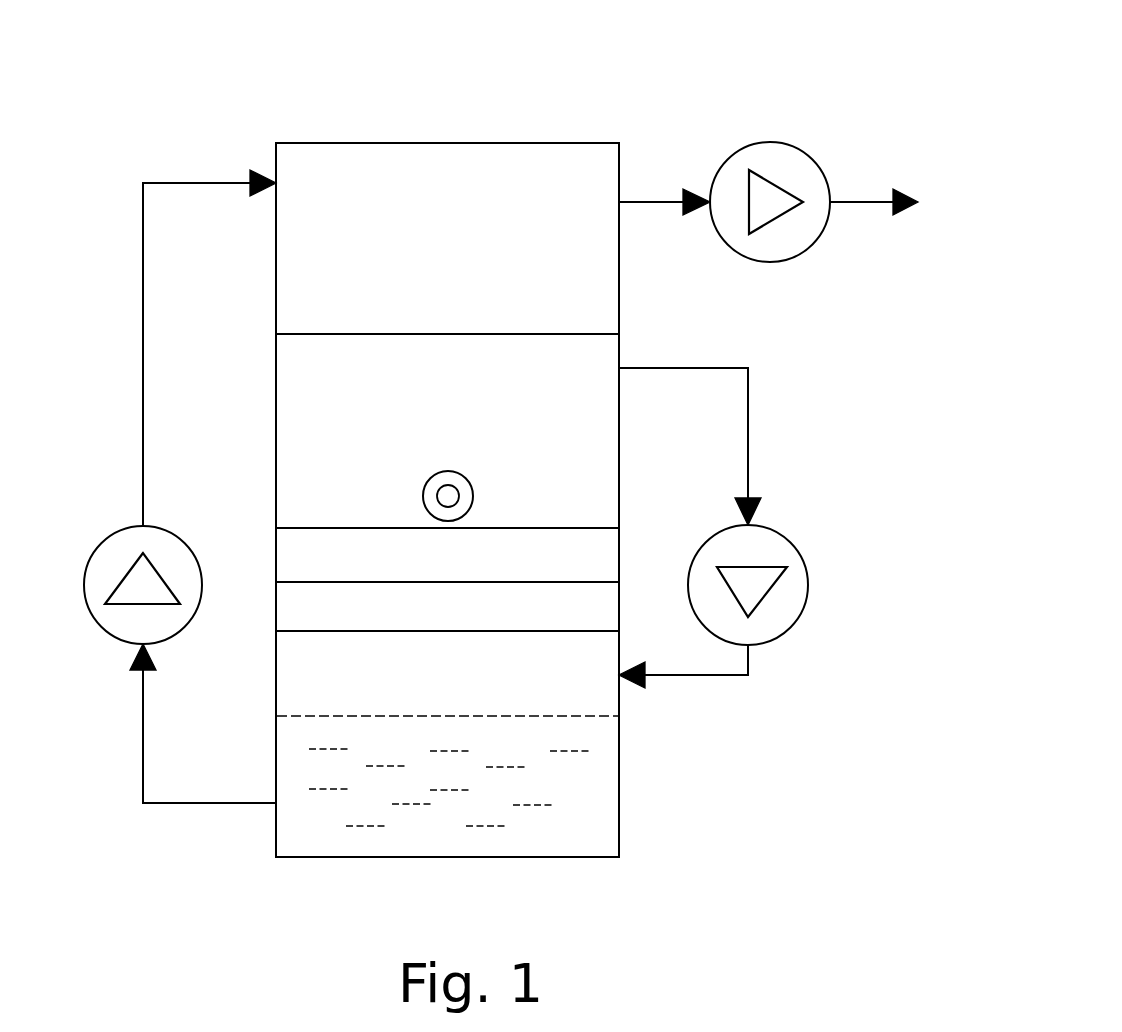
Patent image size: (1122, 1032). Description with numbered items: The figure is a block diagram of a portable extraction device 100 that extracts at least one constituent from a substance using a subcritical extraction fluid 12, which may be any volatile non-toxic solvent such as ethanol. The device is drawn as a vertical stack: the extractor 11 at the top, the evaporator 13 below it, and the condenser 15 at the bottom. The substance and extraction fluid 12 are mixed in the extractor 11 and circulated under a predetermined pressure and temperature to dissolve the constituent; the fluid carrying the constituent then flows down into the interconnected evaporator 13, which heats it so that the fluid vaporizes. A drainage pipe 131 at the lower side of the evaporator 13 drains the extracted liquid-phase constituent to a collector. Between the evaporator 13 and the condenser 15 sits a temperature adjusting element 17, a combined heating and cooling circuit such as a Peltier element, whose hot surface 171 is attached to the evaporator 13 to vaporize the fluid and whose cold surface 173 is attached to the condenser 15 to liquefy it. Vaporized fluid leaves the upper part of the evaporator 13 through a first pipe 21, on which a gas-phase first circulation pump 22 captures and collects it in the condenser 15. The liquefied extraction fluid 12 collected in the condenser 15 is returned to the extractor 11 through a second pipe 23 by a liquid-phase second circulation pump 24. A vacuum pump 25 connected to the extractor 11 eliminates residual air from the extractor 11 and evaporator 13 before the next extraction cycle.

The portable extraction device 100 is at (835, 36).
The extractor 11 is at (575, 283).
The extraction fluid 12 is at (575, 794).
The evaporator 13 is at (575, 451).
The drainage pipe 131 is at (453, 496).
The condenser 15 is at (578, 695).
The temperature adjusting element 17 is at (447, 521).
The hot surface 171 is at (323, 563).
The cold surface 173 is at (358, 603).
The first pipe 21 is at (748, 457).
The first circulation pump 22 is at (755, 584).
The second pipe 23 is at (143, 392).
The second circulation pump 24 is at (130, 588).
The vacuum pump 25 is at (775, 243).